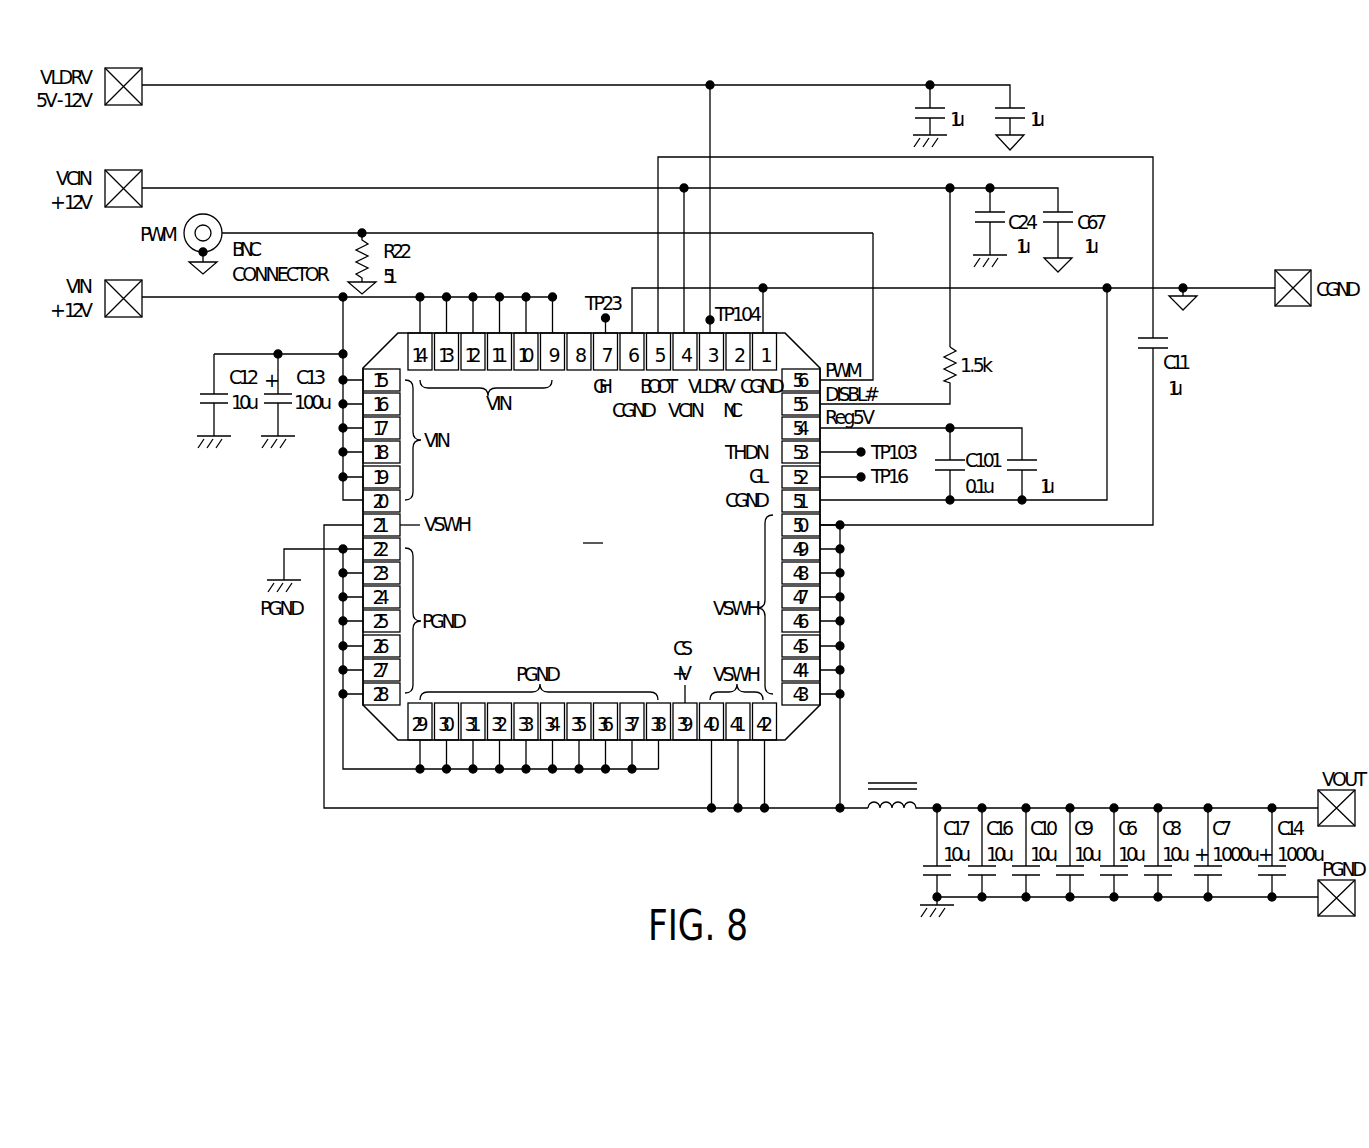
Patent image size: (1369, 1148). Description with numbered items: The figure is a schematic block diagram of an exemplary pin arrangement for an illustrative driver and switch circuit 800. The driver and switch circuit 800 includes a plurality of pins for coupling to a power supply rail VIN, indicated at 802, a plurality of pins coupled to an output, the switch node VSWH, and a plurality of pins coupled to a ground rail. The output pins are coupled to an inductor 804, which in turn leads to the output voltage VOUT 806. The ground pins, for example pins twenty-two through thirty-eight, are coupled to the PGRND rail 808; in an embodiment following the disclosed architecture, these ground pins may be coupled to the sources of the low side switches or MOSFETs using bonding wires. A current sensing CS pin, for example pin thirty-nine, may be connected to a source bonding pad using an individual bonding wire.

The driver and switch circuit 800 is at (262, 764).
The input voltage VIN line 802 is at (186, 299).
The inductor 804 is at (891, 811).
The VOUT 806 is at (1318, 800).
The ground (PGRND) rail 808 is at (385, 809).